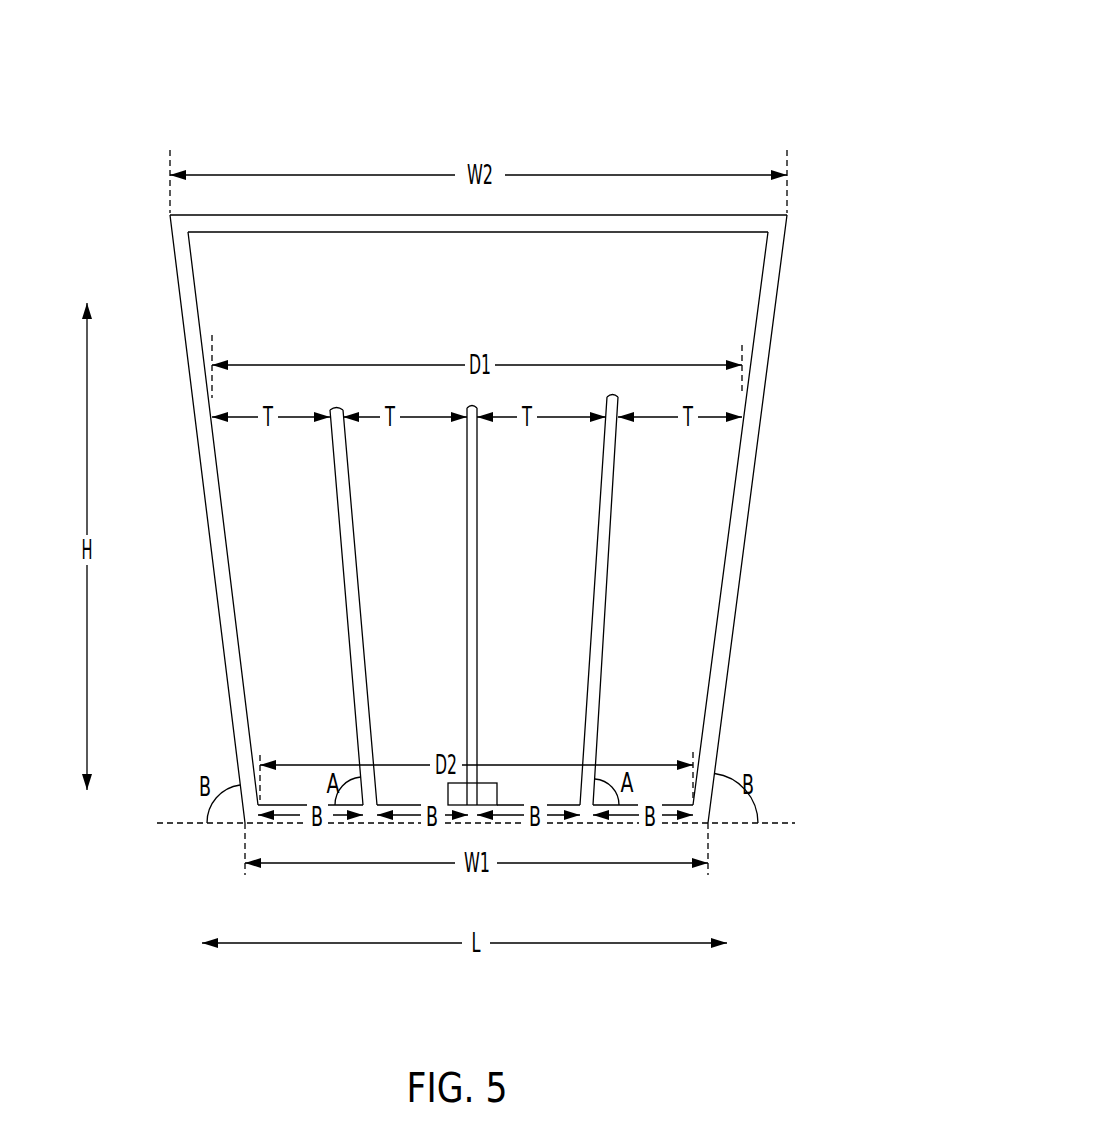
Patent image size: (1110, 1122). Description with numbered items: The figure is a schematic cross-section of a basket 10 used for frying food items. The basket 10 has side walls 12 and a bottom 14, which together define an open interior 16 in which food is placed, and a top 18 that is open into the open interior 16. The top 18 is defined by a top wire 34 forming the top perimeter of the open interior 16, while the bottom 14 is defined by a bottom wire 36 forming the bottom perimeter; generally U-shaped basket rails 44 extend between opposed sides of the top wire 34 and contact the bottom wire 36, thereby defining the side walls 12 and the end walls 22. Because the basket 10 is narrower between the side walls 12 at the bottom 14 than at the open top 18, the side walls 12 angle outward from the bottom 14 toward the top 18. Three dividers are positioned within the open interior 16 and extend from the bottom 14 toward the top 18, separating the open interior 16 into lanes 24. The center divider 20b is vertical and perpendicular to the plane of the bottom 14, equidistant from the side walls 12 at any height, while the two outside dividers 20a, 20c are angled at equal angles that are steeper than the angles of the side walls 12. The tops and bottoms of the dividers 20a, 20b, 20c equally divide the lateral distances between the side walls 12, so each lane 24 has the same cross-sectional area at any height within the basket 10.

The basket 10 is at (757, 73).
The side walls 12 is at (196, 572).
The bottom 14 is at (556, 846).
The open interior 16 is at (621, 258).
The top 18 is at (391, 188).
The divider 20a is at (340, 513).
The center divider 20b is at (467, 513).
The divider 20c is at (600, 510).
The end walls 22 is at (218, 283).
The lanes 24 is at (295, 428).
The top wire 34 is at (778, 224).
The bottom wire 36 is at (380, 823).
The basket rails 44 is at (752, 428).